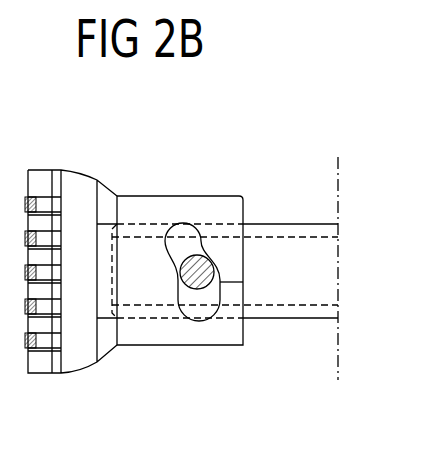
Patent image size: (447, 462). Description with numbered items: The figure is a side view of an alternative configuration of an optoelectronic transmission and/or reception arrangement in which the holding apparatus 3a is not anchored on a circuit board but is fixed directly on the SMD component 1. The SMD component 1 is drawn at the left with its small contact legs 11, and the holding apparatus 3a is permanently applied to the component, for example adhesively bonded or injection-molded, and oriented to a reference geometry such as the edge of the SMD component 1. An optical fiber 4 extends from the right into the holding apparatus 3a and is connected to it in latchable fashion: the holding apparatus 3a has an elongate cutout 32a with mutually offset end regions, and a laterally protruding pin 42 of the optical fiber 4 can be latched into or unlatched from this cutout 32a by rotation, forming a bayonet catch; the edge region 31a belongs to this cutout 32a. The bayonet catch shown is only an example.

The SMD component 1 is at (77, 370).
The contact legs 11 is at (45, 342).
The holding apparatus 3a is at (170, 196).
The optical fiber 4 is at (327, 268).
The locking pin 42 is at (206, 258).
The elongate cutout 32a is at (197, 287).
The slot edge 31a is at (228, 293).